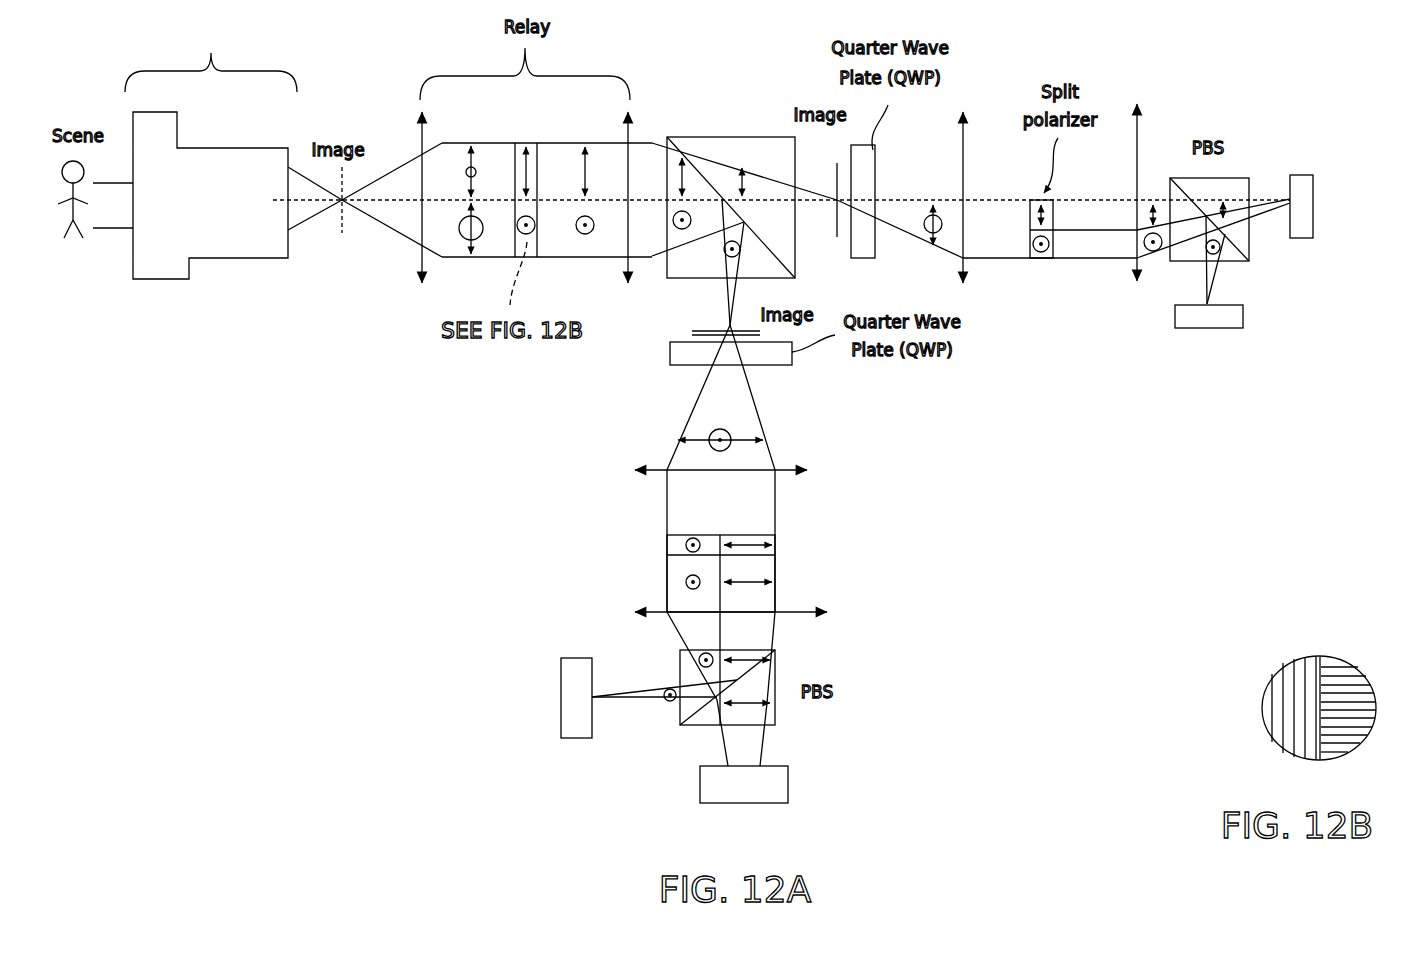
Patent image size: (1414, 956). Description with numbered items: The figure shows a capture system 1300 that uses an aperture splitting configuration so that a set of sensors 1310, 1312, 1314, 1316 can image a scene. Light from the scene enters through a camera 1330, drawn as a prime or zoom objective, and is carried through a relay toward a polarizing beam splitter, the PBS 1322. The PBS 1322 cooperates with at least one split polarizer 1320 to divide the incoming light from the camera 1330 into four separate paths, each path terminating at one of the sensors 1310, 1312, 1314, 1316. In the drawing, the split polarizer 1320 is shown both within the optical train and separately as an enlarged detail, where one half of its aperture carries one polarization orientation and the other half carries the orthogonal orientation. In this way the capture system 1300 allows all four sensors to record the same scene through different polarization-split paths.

In FIG. 12A, the capture system 1300 is at (781, 529).
In FIG. 12A, the sensor 1310 is at (559, 686).
In FIG. 12A, the sensor 1312 is at (700, 790).
In FIG. 12A, the sensor 1314 is at (1213, 328).
In FIG. 12A, the sensor 1316 is at (1313, 208).
In FIG. 12A, the split polarizer 1320 is at (786, 545).
In FIG. 12B, the split polarizer 1320 is at (1262, 700).
In FIG. 12A, the PBS 1322 is at (732, 137).
In FIG. 12A, the camera 1330 is at (160, 279).